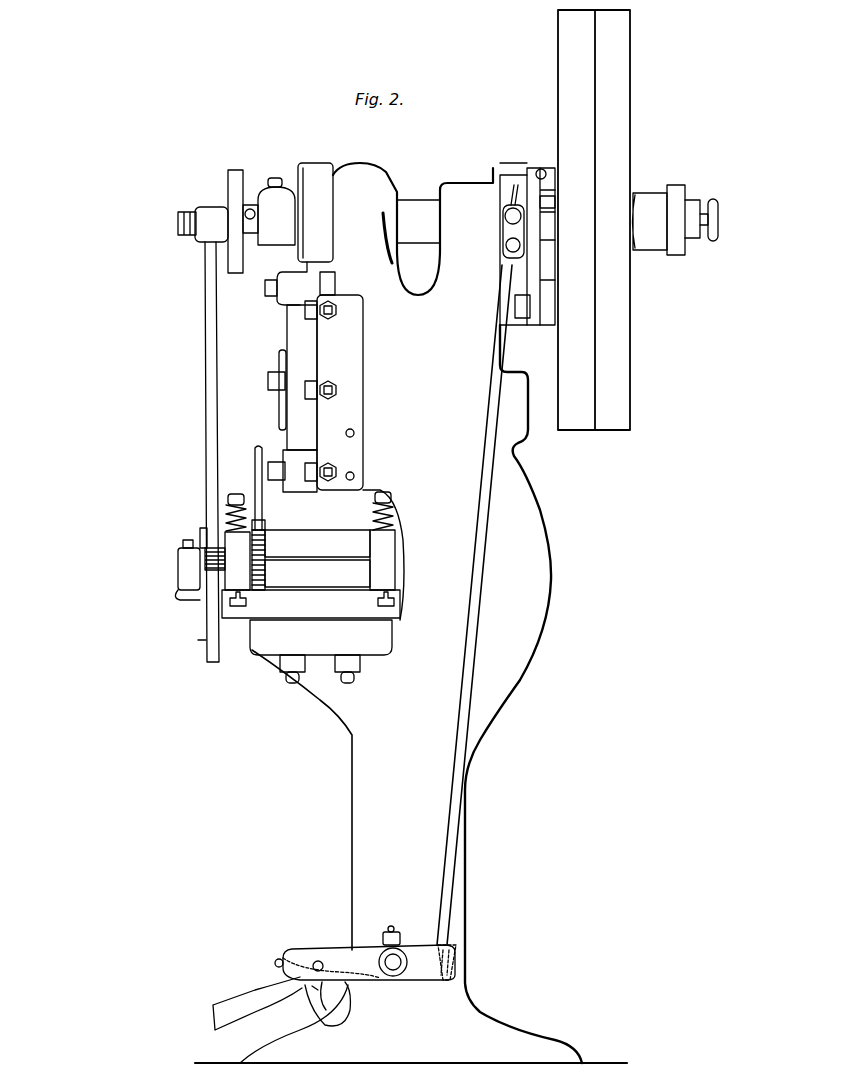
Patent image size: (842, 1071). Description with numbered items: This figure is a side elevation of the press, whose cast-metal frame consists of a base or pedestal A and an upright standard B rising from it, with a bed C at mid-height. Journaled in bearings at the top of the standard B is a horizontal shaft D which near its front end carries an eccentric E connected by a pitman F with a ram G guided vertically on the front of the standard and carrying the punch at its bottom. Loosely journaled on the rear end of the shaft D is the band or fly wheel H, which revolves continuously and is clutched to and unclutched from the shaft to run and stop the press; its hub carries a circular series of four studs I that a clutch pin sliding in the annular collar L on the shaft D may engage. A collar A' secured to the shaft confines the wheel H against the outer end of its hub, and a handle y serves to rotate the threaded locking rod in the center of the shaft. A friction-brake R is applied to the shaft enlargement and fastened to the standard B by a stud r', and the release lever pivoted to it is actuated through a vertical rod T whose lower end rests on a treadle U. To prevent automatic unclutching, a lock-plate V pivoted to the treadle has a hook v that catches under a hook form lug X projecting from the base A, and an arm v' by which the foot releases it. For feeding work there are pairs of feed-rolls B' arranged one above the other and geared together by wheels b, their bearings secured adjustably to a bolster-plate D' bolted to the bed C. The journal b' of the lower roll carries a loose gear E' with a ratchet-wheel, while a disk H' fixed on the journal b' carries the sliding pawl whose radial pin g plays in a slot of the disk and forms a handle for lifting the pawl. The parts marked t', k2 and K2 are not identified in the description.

The standard B is at (411, 613).
The horizontal shaft D is at (418, 221).
The fly wheel H is at (605, 220).
The collar A' is at (669, 216).
The handle y is at (715, 220).
The studs I is at (570, 266).
The friction-brake R is at (556, 202).
The pivot t' is at (503, 221).
The stud r' is at (519, 306).
The vertical rod T is at (470, 575).
The eccentric E is at (315, 212).
The pitman F is at (300, 283).
The ram G is at (315, 393).
The collar L is at (230, 186).
The lever k2 is at (206, 322).
The disk H' is at (215, 512).
The radial pin g is at (200, 540).
The journal b' is at (178, 570).
The gear E' is at (227, 561).
The gear wheels b is at (266, 518).
The feed-rolls B' is at (330, 541).
The bolster-plate D' is at (311, 604).
The bed C is at (321, 651).
The lever end K2 is at (193, 639).
The treadle U is at (343, 960).
The hook form lug X is at (306, 1004).
The lock-plate V is at (345, 990).
The arm v' is at (274, 954).
The hook v is at (310, 986).
The base A is at (400, 1046).